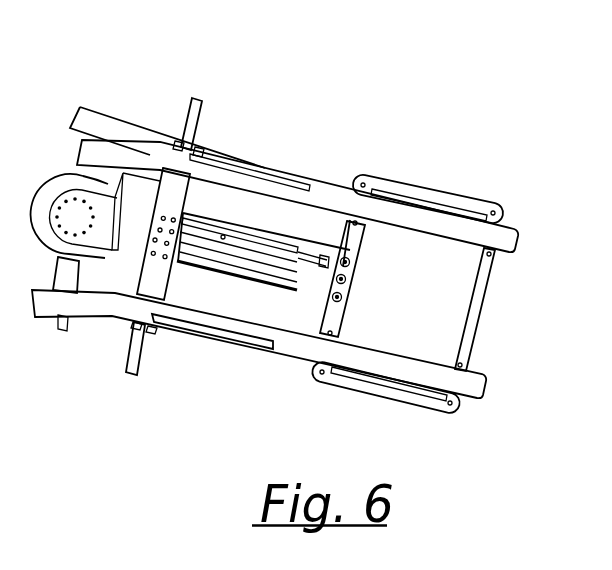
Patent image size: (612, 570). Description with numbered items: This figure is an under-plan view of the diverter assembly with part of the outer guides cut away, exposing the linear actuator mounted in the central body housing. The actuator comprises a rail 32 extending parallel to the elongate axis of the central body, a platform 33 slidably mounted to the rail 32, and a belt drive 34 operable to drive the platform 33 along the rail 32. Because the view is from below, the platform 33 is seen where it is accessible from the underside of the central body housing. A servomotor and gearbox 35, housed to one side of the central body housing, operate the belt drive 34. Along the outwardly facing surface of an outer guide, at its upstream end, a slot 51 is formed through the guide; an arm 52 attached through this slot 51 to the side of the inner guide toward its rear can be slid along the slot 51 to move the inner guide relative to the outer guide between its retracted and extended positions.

The rail 32 is at (229, 272).
The platform 33 is at (145, 243).
The belt drive 34 is at (208, 233).
The servomotor and gearbox 35 is at (133, 192).
The slot 51 is at (240, 341).
The arm 52 is at (136, 337).